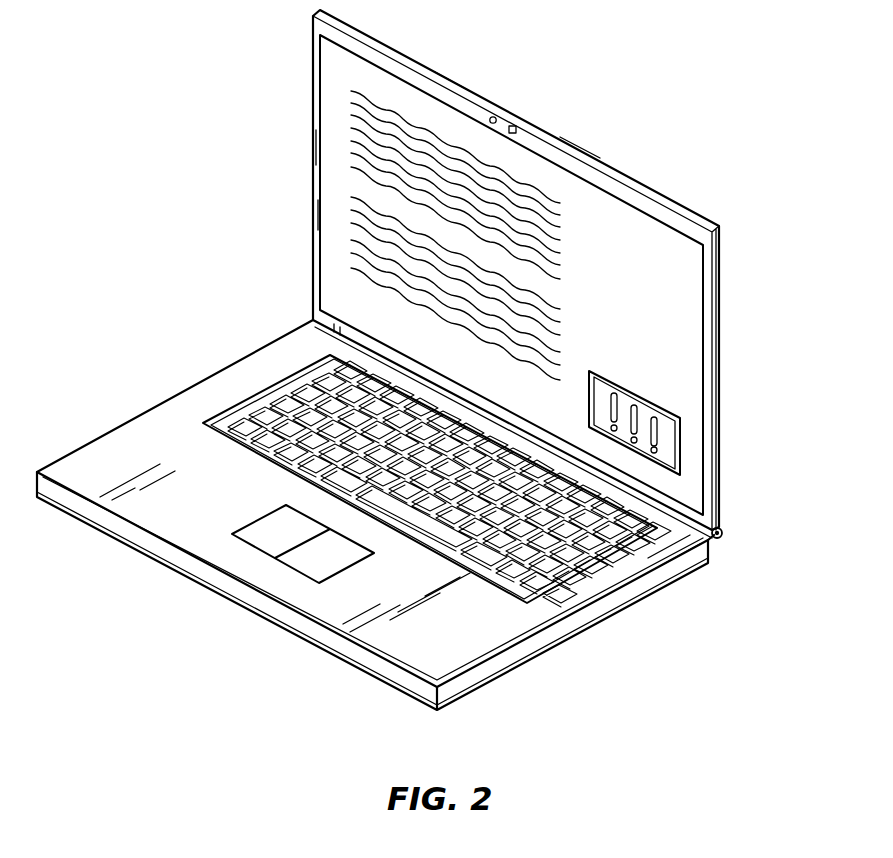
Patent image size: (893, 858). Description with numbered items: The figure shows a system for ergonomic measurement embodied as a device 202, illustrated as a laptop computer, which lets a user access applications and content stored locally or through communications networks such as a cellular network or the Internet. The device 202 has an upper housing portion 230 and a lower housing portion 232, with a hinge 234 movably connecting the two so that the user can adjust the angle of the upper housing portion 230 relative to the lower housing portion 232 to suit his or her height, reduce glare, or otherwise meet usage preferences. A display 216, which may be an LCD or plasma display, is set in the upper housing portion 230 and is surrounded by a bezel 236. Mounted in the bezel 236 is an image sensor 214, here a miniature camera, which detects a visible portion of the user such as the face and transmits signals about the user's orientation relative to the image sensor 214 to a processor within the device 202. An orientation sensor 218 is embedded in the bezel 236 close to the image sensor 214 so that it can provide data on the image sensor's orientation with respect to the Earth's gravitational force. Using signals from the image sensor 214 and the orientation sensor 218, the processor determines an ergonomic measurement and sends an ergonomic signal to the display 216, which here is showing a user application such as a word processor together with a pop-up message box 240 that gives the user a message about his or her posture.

The device 202 is at (195, 274).
The image sensor 214 is at (493, 116).
The display 216 is at (676, 275).
The orientation sensor 218 is at (515, 125).
The upper housing portion 230 is at (313, 283).
The lower housing portion 232 is at (190, 402).
The hinge 234 is at (725, 533).
The bezel 236 is at (313, 90).
The pop-up message box 240 is at (682, 448).